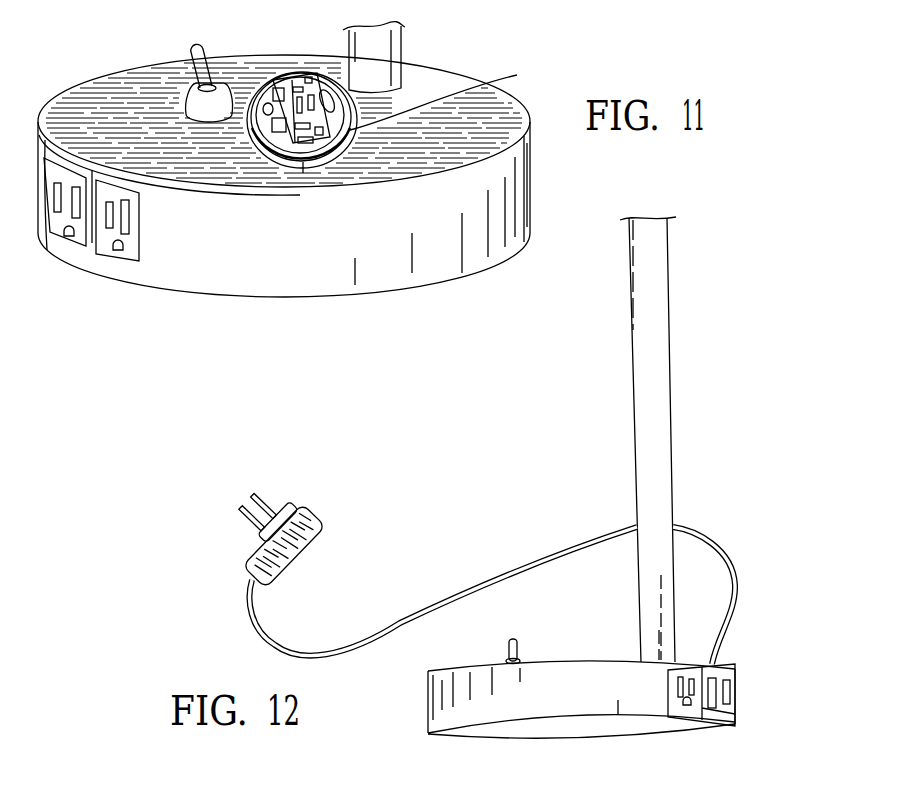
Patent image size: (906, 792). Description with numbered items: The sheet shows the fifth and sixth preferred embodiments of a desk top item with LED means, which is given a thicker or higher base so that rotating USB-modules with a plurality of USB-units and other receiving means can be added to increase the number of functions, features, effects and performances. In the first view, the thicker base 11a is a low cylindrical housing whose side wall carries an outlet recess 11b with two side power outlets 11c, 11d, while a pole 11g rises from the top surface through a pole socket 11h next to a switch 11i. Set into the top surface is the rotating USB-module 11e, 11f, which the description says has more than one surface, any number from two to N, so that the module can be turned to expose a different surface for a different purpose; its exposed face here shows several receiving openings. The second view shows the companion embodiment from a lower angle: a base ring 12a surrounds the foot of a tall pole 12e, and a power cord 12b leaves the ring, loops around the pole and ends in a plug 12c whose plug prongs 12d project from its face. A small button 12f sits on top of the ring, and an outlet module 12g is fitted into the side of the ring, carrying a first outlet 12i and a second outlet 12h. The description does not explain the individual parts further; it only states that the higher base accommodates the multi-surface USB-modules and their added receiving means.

In FIG. 11, the base housing 11a is at (253, 277).
In FIG. 11, the outlet recess 11b is at (138, 226).
In FIG. 11, the first side power outlet 11c is at (80, 237).
In FIG. 11, the second side power outlet 11d is at (106, 243).
In FIG. 11, the USB-module 11e is at (517, 75).
In FIG. 11, the USB-module 11f is at (308, 147).
In FIG. 11, the pole 11g is at (403, 43).
In FIG. 11, the pole socket 11h is at (348, 55).
In FIG. 11, the switch 11i is at (195, 105).
In FIG. 12, the base ring 12a is at (478, 710).
In FIG. 12, the power cord 12b is at (713, 540).
In FIG. 12, the plug 12c is at (323, 525).
In FIG. 12, the plug prongs 12d is at (255, 492).
In FIG. 12, the pole 12e is at (647, 495).
In FIG. 12, the button 12f is at (515, 640).
In FIG. 12, the outlet module 12g is at (735, 690).
In FIG. 12, the second outlet 12h is at (712, 705).
In FIG. 12, the first outlet 12i is at (673, 703).